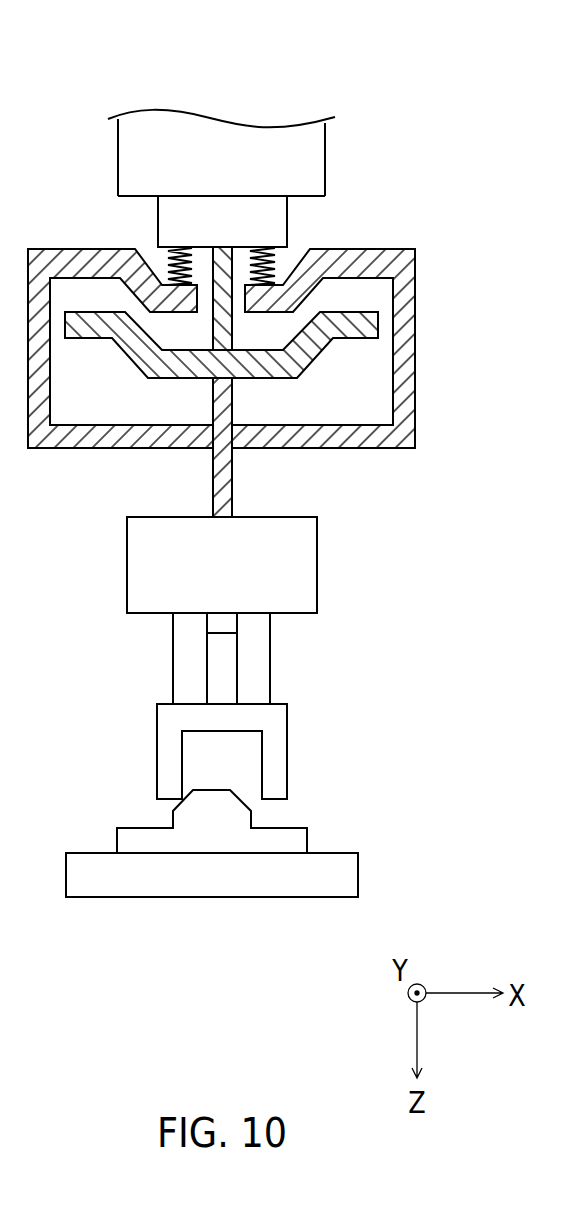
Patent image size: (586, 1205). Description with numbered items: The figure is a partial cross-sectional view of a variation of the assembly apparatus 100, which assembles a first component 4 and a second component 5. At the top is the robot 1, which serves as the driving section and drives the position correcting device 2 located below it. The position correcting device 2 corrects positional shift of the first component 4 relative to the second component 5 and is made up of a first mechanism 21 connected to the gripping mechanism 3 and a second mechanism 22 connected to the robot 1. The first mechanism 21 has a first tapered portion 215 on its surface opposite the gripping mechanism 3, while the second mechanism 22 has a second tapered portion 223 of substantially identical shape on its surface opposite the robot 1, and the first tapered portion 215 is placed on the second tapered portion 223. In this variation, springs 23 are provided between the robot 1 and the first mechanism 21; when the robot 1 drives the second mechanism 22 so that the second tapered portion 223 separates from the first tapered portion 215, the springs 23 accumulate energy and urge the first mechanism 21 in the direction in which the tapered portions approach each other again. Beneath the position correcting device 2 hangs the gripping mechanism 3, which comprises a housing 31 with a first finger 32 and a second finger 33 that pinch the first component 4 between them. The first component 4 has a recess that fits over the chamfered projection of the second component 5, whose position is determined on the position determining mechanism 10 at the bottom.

The assembly apparatus 100 is at (327, 85).
The robot 1 is at (325, 167).
The position correcting device 2 is at (283, 324).
The first mechanism 21 is at (415, 428).
The first tapered portion 215 is at (297, 263).
The second mechanism 22 is at (343, 340).
The second tapered portion 223 is at (126, 358).
The springs 23 is at (167, 258).
The gripping mechanism 3 is at (267, 541).
The housing 31 is at (317, 549).
The first finger 32 is at (173, 657).
The second finger 33 is at (270, 657).
The first component 4 is at (287, 722).
The second component 5 is at (295, 827).
The position determining mechanism 10 is at (350, 852).